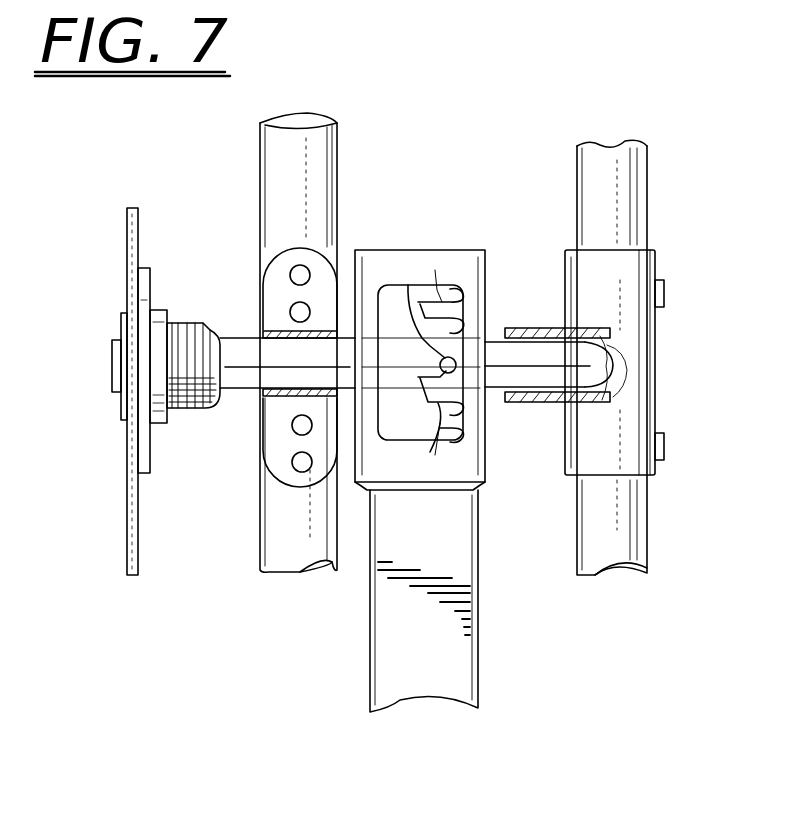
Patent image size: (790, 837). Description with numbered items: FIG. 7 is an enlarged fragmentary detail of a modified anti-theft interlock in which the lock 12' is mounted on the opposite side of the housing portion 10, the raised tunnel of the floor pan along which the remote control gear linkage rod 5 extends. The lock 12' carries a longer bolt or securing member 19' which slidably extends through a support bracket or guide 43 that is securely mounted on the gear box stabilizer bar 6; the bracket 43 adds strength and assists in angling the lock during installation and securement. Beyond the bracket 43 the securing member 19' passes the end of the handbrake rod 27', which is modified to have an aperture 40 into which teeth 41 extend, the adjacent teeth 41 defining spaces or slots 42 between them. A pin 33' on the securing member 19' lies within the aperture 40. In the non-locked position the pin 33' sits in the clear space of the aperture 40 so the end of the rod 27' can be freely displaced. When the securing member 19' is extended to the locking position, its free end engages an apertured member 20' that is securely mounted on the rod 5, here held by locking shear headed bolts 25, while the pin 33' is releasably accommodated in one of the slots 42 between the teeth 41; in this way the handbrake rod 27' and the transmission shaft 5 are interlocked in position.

The housing portion 10 is at (119, 557).
The lock 12' is at (122, 370).
The securing member 19' is at (397, 386).
The apertured member 20' is at (580, 380).
The locking shear headed bolts 25 is at (665, 446).
The handbrake rod 27' is at (450, 601).
The pin 33' is at (485, 332).
The aperture 40 is at (420, 370).
The teeth 41 is at (467, 368).
The spaces or slots 42 is at (460, 293).
The support bracket 43 is at (277, 306).
The remote control gear linkage rod 5 is at (593, 183).
The gear box stabilizer bar 6 is at (327, 191).